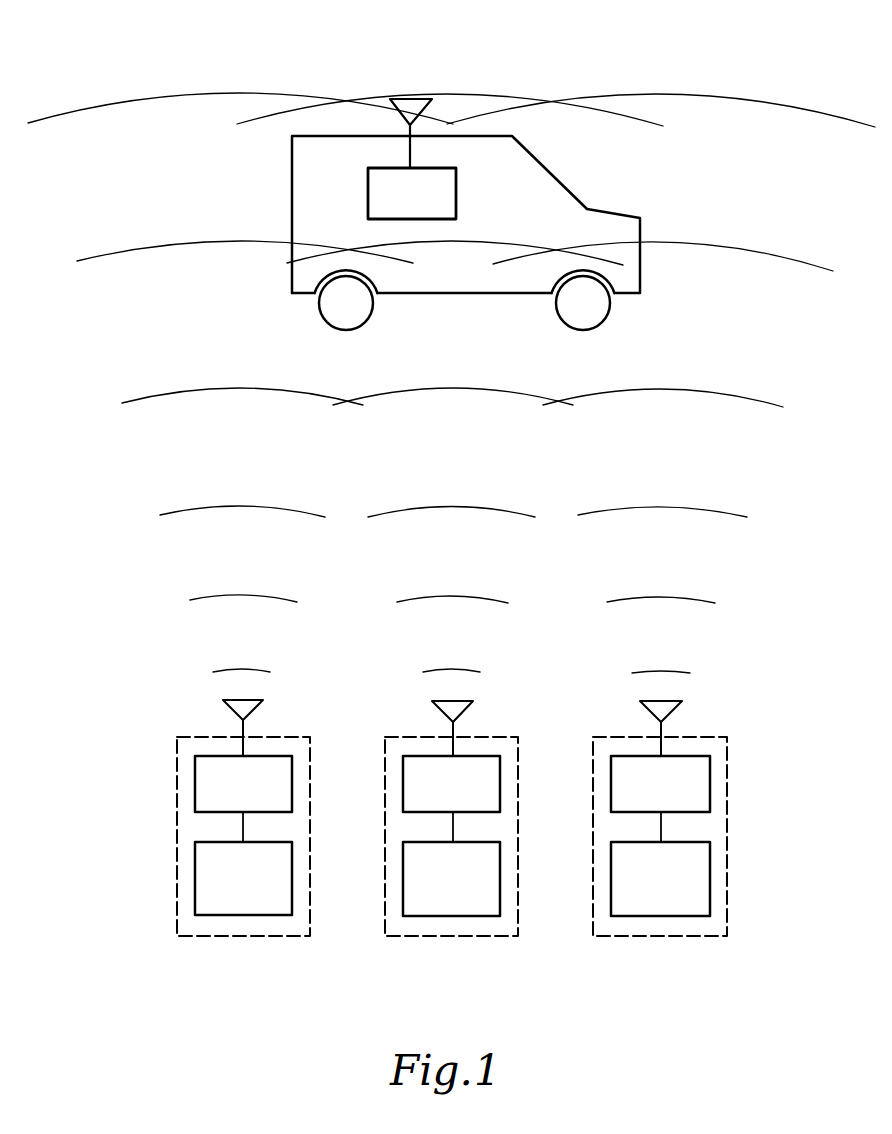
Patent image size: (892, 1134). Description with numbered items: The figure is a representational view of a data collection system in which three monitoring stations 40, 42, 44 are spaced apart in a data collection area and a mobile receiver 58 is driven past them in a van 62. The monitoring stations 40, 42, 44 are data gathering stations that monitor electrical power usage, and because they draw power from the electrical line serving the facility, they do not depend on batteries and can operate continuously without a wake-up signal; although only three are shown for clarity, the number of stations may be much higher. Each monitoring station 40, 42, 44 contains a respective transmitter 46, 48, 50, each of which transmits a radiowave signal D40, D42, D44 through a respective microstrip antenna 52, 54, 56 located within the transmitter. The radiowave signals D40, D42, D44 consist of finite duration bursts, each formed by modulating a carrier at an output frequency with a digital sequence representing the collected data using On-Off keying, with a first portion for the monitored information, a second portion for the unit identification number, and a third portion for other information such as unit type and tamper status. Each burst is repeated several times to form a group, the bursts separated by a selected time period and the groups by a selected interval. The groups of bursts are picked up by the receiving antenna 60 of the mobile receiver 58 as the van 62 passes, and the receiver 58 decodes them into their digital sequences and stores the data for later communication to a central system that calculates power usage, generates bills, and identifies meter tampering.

The monitoring station 40 is at (177, 907).
The monitoring station 42 is at (385, 862).
The monitoring station 44 is at (727, 888).
The transmitter 46 is at (195, 788).
The transmitter 48 is at (403, 756).
The transmitter 50 is at (710, 763).
The microstrip antenna 52 is at (235, 699).
The microstrip antenna 54 is at (445, 699).
The microstrip antenna 56 is at (655, 700).
The mobile receiver 58 is at (448, 168).
The receiving antenna 60 is at (430, 98).
The van 62 is at (512, 136).
The radiowave signal D40 is at (190, 508).
The radiowave signal D42 is at (447, 505).
The radiowave signal D44 is at (690, 508).